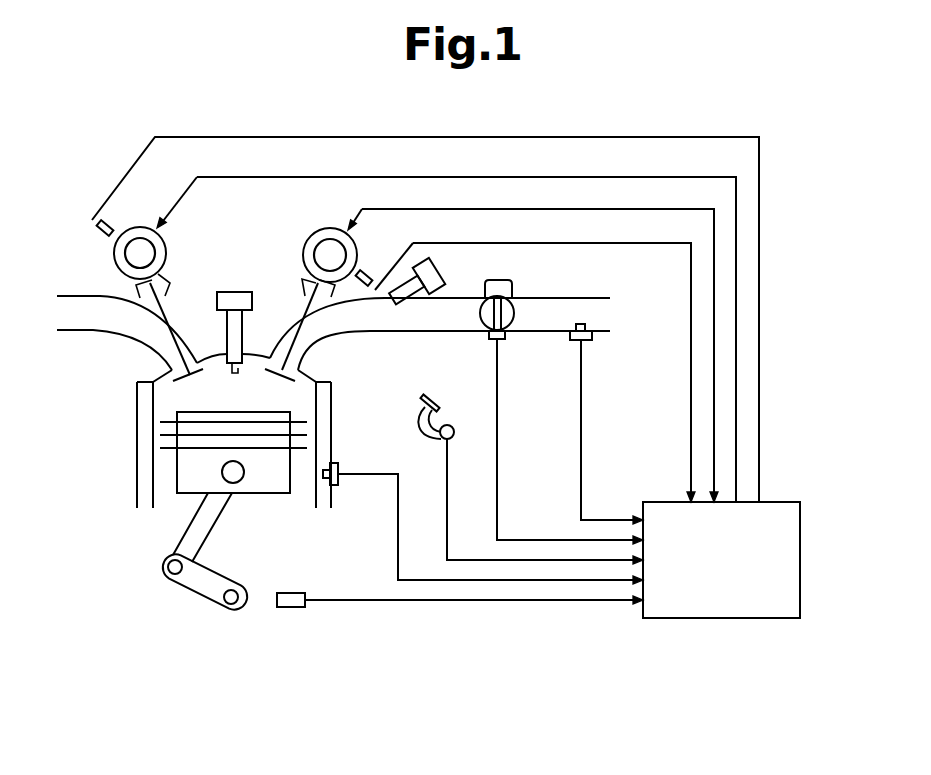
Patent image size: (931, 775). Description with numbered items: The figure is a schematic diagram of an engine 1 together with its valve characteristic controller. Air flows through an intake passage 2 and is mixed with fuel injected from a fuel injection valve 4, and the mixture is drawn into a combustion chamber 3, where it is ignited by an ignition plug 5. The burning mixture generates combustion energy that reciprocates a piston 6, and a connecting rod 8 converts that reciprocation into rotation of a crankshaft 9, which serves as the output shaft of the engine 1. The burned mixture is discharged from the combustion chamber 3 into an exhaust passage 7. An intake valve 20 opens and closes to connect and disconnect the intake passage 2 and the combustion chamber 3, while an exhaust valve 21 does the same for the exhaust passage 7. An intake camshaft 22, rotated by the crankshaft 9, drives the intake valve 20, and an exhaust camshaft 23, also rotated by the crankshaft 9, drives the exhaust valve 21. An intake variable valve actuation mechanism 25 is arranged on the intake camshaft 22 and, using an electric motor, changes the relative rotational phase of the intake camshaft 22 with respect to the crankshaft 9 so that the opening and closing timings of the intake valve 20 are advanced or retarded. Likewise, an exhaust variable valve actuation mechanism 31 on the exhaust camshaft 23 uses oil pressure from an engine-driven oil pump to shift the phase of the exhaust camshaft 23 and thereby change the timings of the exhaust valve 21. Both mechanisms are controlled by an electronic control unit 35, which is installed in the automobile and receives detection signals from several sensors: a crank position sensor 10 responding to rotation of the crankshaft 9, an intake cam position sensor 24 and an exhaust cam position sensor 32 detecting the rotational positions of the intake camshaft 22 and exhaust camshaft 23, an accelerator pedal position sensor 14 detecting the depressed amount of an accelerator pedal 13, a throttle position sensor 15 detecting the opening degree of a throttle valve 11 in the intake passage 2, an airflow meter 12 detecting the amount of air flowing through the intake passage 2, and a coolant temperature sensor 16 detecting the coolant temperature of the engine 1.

The engine 1 is at (123, 129).
The intake passage 2 is at (609, 301).
The combustion chamber 3 is at (170, 390).
The fuel injection valve 4 is at (445, 270).
The ignition plug 5 is at (227, 337).
The piston 6 is at (268, 495).
The exhaust passage 7 is at (96, 328).
The connecting rod 8 is at (178, 540).
The crankshaft 9 is at (243, 586).
The crank position sensor 10 is at (296, 588).
The throttle valve 11 is at (515, 312).
The airflow meter 12 is at (590, 338).
The accelerator pedal 13 is at (418, 395).
The accelerator pedal position sensor 14 is at (455, 418).
The throttle position sensor 15 is at (505, 340).
The coolant temperature sensor 16 is at (336, 462).
The intake valve 20 is at (287, 348).
The exhaust valve 21 is at (176, 352).
The intake camshaft 22 is at (315, 258).
The exhaust camshaft 23 is at (158, 253).
The intake cam position sensor 24 is at (364, 272).
The intake variable valve actuation mechanism 25 is at (312, 234).
The exhaust variable valve actuation mechanism 31 is at (113, 267).
The exhaust cam position sensor 32 is at (110, 223).
The electronic control unit (ECU) 35 is at (643, 618).